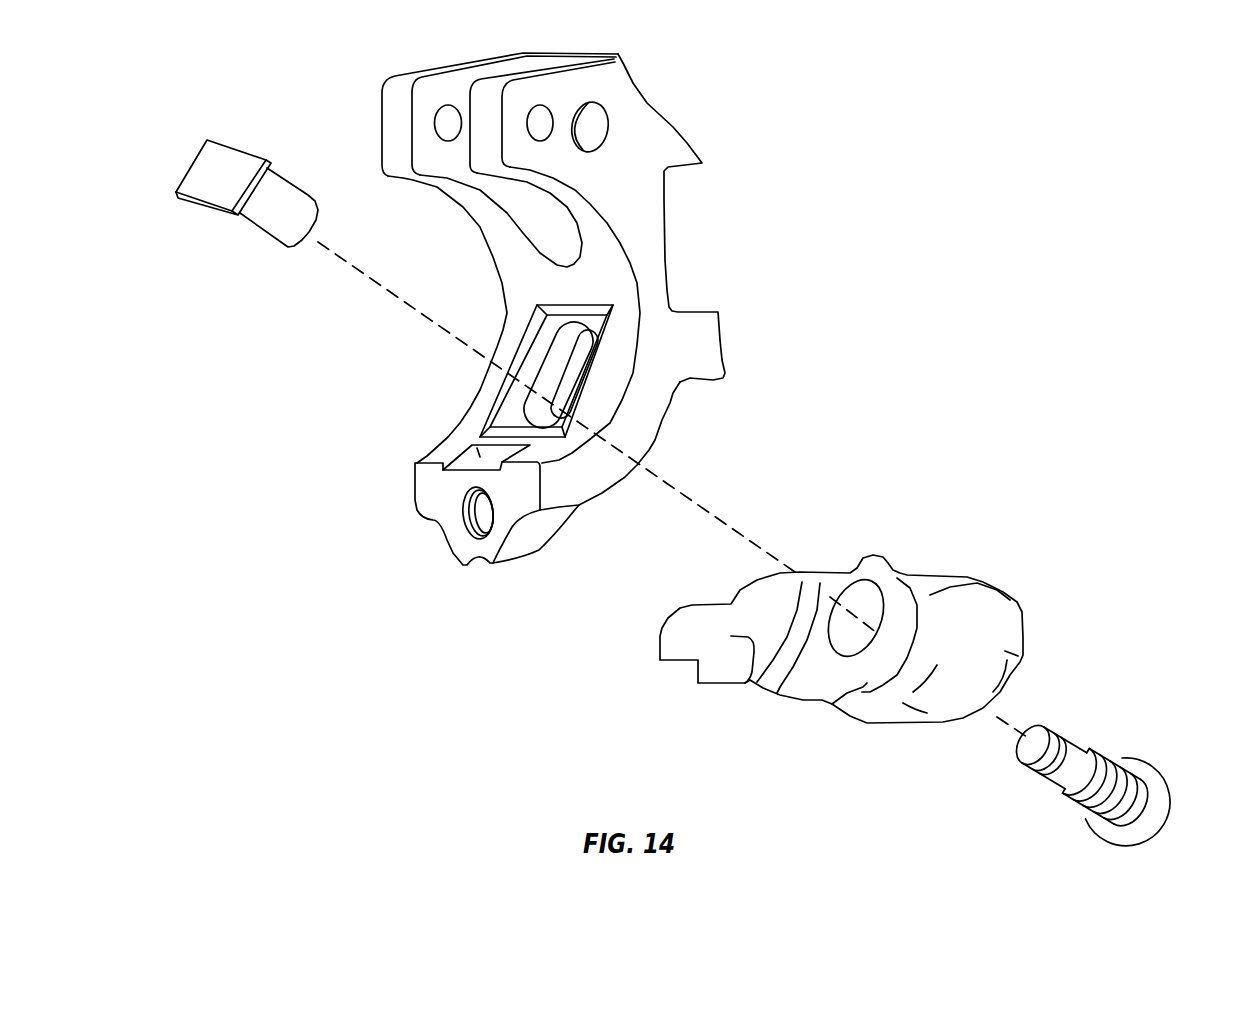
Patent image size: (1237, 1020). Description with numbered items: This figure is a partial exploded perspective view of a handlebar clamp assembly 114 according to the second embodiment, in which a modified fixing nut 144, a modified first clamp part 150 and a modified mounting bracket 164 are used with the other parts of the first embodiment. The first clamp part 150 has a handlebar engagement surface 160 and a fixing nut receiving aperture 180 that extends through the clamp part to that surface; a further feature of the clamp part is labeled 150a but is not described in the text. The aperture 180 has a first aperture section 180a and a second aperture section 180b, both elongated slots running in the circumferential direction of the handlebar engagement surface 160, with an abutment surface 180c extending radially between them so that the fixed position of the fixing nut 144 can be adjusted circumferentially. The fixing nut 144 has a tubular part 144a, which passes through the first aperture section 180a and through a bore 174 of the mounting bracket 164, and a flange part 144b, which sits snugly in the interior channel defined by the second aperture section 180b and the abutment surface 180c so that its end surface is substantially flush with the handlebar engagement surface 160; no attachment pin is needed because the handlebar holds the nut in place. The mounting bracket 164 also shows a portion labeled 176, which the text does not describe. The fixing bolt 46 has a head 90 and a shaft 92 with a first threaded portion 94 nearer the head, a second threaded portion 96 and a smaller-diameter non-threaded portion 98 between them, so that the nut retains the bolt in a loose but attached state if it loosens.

The handlebar clamp assembly 114 is at (829, 113).
The fixing nut 144 is at (262, 232).
The tubular part 144a is at (287, 176).
The flange part 144b is at (241, 143).
The first clamp part 150 is at (640, 118).
The threaded bore 150a is at (465, 530).
The handlebar engagement surface 160 is at (608, 238).
The fixing nut receiving aperture 180 is at (570, 355).
The first aperture section 180a is at (568, 340).
The second aperture section 180b is at (595, 383).
The abutment surface 180c is at (567, 421).
The mounting bracket 164 is at (979, 571).
The bore 174 is at (850, 660).
The curved flange 176 is at (793, 682).
The fixing bolt 46 is at (1158, 762).
The head 90 is at (1137, 835).
The shaft 92 is at (1163, 668).
The first threaded portion 94 is at (1107, 755).
The second threaded portion 96 is at (1055, 724).
The non-threaded portion 98 is at (1072, 743).